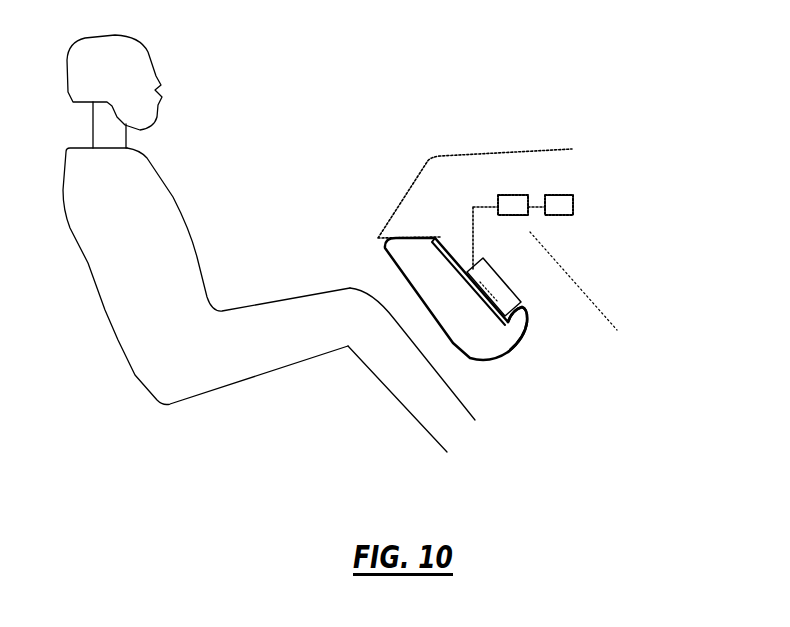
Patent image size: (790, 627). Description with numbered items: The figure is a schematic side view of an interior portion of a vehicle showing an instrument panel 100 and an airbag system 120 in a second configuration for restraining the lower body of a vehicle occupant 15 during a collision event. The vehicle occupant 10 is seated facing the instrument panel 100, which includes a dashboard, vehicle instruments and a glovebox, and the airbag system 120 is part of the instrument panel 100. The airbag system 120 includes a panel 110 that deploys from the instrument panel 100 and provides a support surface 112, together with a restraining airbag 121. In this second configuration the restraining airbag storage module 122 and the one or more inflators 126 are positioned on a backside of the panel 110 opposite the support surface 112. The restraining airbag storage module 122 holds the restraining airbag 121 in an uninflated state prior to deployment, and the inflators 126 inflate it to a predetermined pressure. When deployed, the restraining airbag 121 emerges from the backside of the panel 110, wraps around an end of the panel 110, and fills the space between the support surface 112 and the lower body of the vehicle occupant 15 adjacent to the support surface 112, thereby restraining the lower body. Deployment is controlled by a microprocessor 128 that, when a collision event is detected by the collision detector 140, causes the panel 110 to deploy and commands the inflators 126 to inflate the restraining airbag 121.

The vehicle occupant 10 is at (145, 188).
The lower body of the vehicle occupant 15 is at (357, 325).
The instrument panel 100 is at (463, 232).
The panel 110 is at (496, 308).
The support surface 112 is at (480, 297).
The airbag system 120 is at (463, 261).
The restraining airbag 121 is at (398, 262).
The restraining airbag storage module 122 is at (402, 218).
The ignitors/inflators 126 is at (487, 278).
The microprocessor 128 is at (515, 203).
The collision detector 140 is at (565, 205).